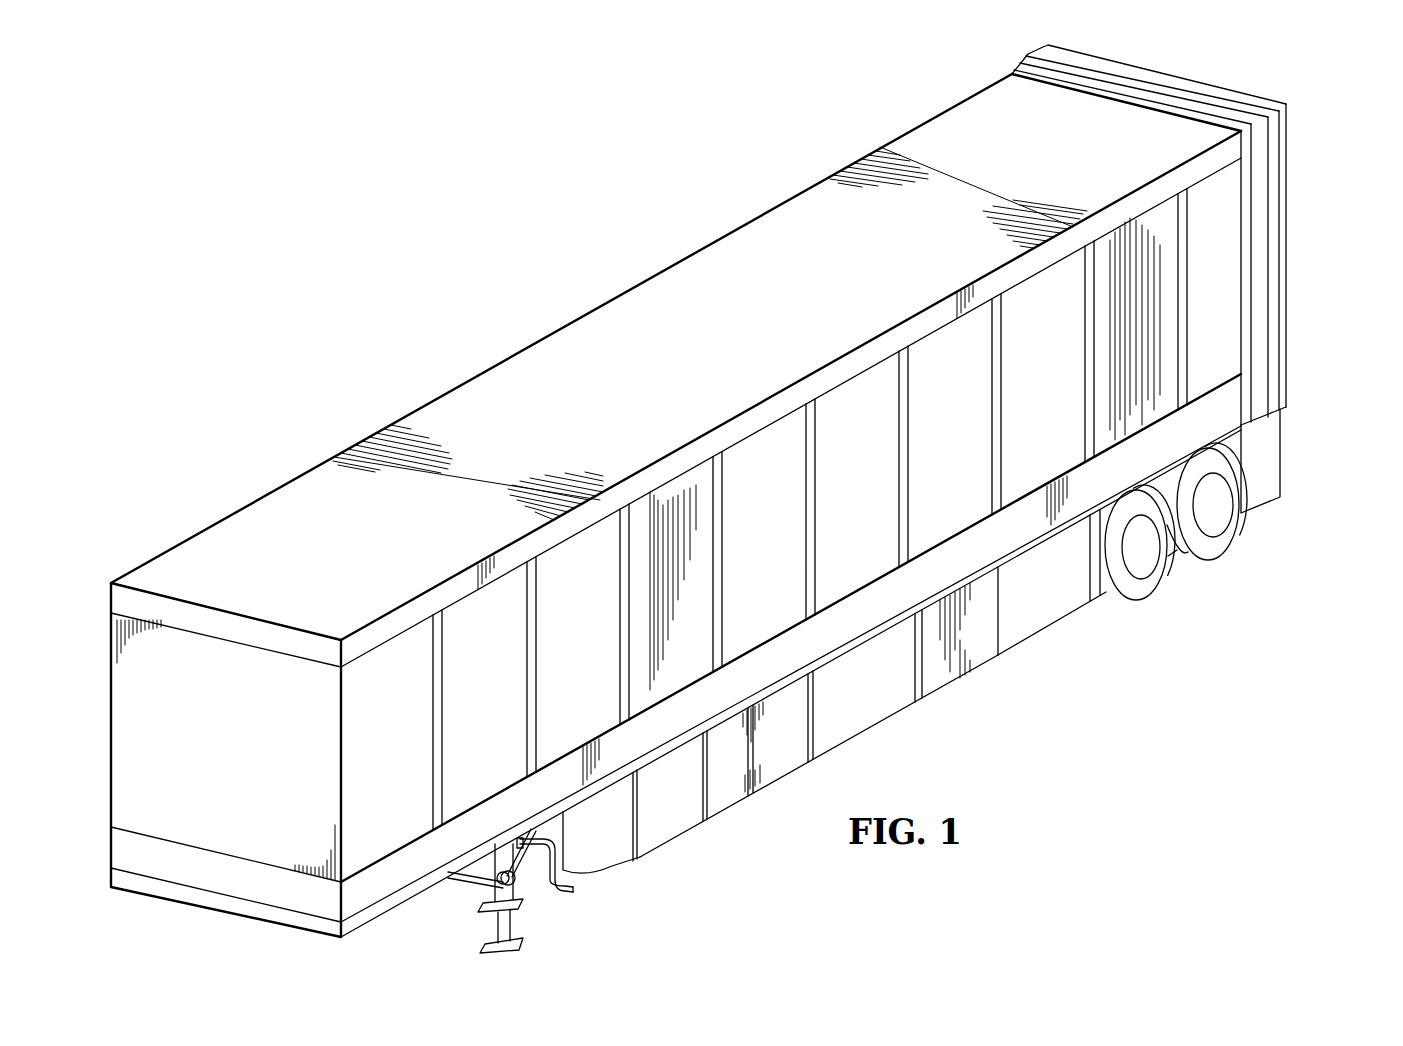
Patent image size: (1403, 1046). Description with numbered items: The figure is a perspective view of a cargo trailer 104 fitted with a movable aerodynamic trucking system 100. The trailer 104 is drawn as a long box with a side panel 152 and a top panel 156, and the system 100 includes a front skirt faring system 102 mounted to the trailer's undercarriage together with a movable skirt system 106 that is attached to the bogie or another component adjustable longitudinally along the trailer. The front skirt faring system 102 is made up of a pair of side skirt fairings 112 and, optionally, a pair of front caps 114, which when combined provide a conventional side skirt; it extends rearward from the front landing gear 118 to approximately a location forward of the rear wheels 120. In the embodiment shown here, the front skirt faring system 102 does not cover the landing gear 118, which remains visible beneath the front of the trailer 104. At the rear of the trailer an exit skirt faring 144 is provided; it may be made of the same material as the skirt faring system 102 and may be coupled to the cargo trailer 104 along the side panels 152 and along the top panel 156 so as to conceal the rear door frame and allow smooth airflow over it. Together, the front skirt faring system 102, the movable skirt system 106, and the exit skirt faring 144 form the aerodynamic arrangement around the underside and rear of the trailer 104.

The movable aerodynamic trucking system 100 is at (1038, 735).
The front skirt faring system 102 is at (958, 723).
The cargo trailer 104 is at (459, 325).
The movable skirt system 106 is at (1189, 607).
The side skirt fairings 112 is at (722, 800).
The front caps 114 is at (597, 860).
The front landing gear 118 is at (493, 927).
The rear wheels 120 is at (1232, 537).
The exit skirt faring 144 is at (1320, 109).
The side panel 152 is at (1218, 242).
The top panel 156 is at (953, 128).